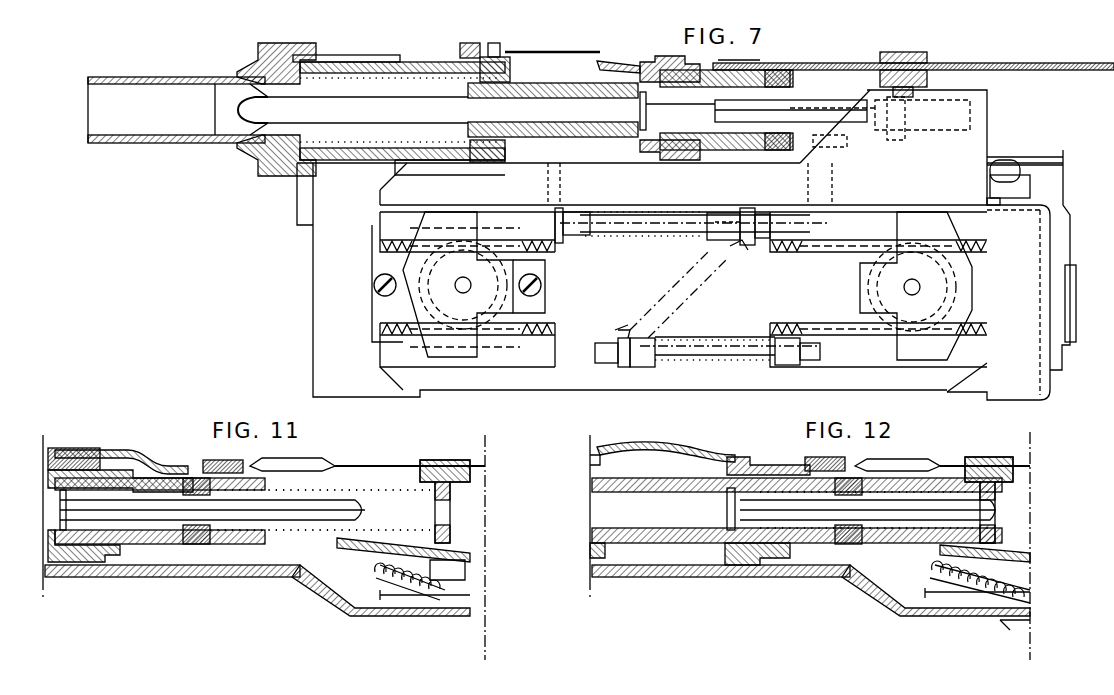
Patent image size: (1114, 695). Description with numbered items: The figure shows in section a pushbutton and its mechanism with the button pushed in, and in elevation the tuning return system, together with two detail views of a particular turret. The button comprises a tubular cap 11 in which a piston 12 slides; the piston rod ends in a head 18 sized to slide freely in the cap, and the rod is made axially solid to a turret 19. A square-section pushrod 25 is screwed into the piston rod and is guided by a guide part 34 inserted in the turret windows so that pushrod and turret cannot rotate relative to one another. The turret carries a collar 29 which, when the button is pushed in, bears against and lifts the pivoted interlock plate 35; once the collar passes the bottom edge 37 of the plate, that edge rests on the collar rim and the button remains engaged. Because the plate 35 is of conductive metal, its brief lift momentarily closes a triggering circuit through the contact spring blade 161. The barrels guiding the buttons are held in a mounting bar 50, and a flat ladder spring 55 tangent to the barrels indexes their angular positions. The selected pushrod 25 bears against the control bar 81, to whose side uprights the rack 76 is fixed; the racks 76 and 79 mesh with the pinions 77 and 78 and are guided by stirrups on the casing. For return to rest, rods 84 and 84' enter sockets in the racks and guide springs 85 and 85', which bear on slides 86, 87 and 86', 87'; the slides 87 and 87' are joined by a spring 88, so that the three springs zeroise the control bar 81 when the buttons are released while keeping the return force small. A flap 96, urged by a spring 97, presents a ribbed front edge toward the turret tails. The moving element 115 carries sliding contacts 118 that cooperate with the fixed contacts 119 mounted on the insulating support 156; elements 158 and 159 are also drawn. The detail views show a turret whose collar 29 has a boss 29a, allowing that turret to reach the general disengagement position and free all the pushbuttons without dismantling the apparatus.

In FIG. 7, the tubular cap 11 is at (146, 143).
In FIG. 7, the piston 12 is at (393, 105).
In FIG. 7, the head 18 is at (225, 125).
In FIG. 11, the turret 19 is at (172, 528).
In FIG. 12, the turret 19 is at (822, 528).
In FIG. 7, the pushrod 25 is at (725, 116).
In FIG. 11, the pushrod 25 is at (145, 520).
In FIG. 12, the pushrod 25 is at (785, 515).
In FIG. 11, the collar 29 is at (85, 566).
In FIG. 12, the collar 29 is at (748, 565).
In FIG. 11, the boss 29a is at (70, 452).
In FIG. 11, the guide part 34 is at (200, 528).
In FIG. 12, the guide part 34 is at (850, 528).
In FIG. 7, the interlock plate 35 is at (632, 62).
In FIG. 11, the interlock plate 35 is at (105, 450).
In FIG. 12, the bottom edge 37 is at (738, 457).
In FIG. 7, the mounting bar 50 is at (305, 50).
In FIG. 7, the spring 55 is at (386, 58).
In FIG. 7, the rack 76 is at (378, 232).
In FIG. 7, the pinion 77 is at (440, 260).
In FIG. 7, the pinion 78 is at (965, 292).
In FIG. 7, the rack 79 is at (383, 347).
In FIG. 7, the control bar 81 is at (987, 110).
In FIG. 7, the rod 84 is at (695, 209).
In FIG. 7, the rod 84' is at (730, 335).
In FIG. 7, the spring 85 is at (716, 211).
In FIG. 7, the spring 85' is at (677, 339).
In FIG. 7, the slide 86 is at (572, 213).
In FIG. 7, the slide 86' is at (797, 338).
In FIG. 7, the slide 87 is at (749, 216).
In FIG. 7, the slide 87' is at (643, 339).
In FIG. 7, the spring 88 is at (632, 318).
In FIG. 11, the flap 96 is at (358, 540).
In FIG. 12, the flap 96 is at (950, 547).
In FIG. 11, the spring 97 is at (375, 572).
In FIG. 12, the spring 97 is at (930, 570).
In FIG. 7, the moving element 115 is at (720, 62).
In FIG. 11, the moving element 115 is at (208, 460).
In FIG. 12, the moving element 115 is at (808, 458).
In FIG. 11, the sliding contacts 118 is at (328, 466).
In FIG. 12, the sliding contacts 118 is at (930, 466).
In FIG. 11, the fixed contacts 119 is at (480, 464).
In FIG. 12, the fixed contacts 119 is at (1022, 463).
In FIG. 7, the insulating support 156 is at (880, 57).
In FIG. 7, the plate 158 is at (922, 62).
In FIG. 7, the side plate 159 is at (1100, 72).
In FIG. 7, the contact spring blade 161 is at (558, 52).